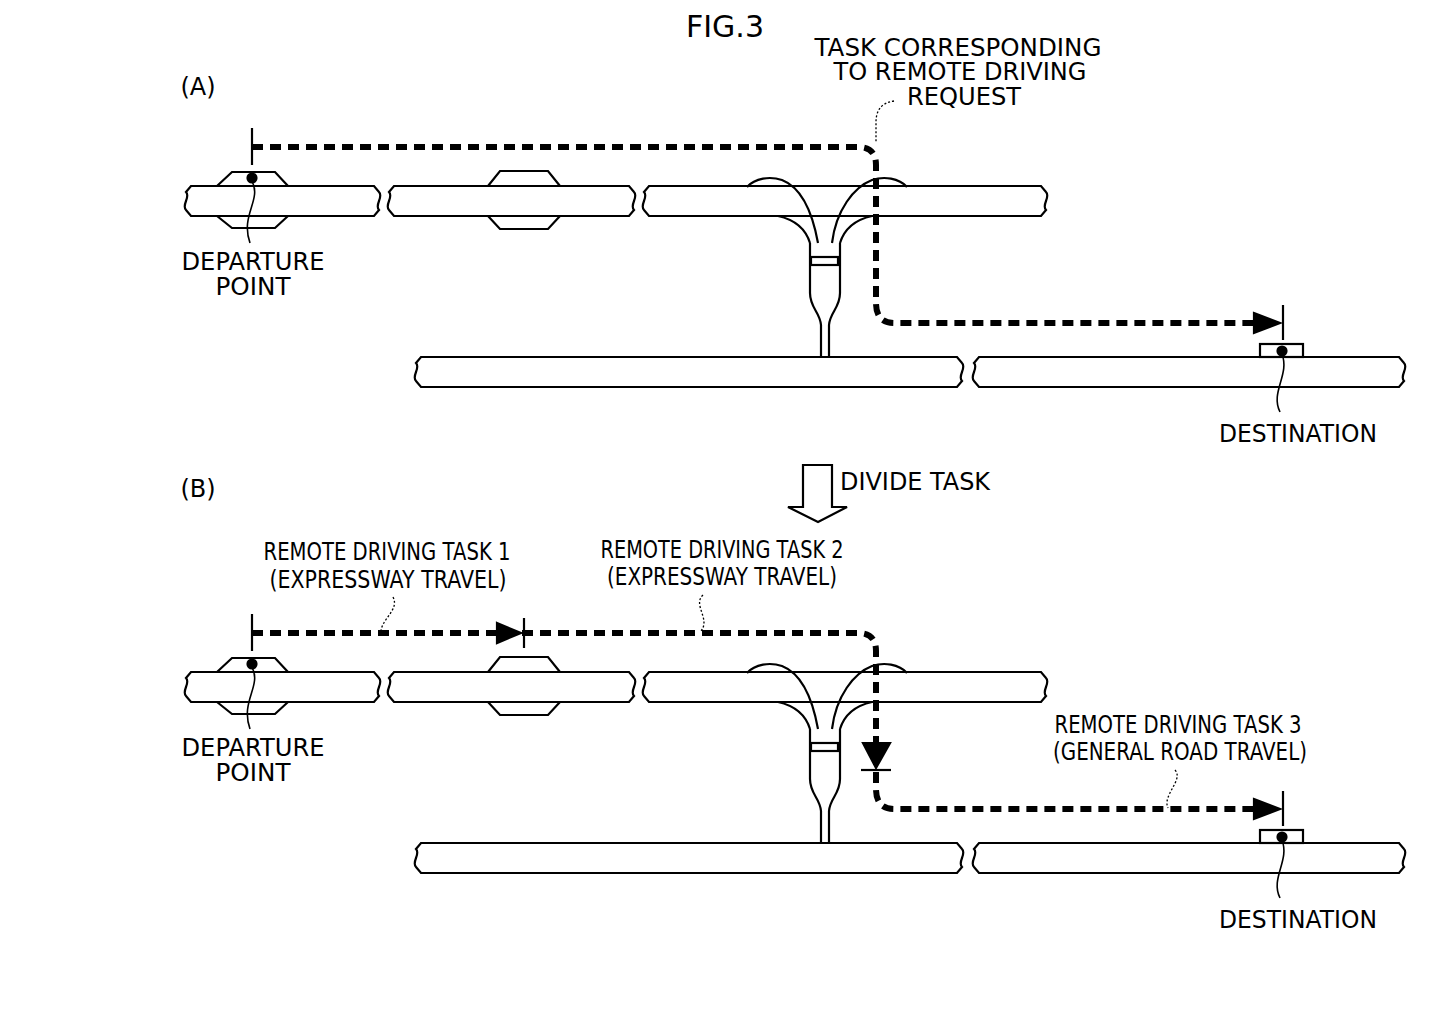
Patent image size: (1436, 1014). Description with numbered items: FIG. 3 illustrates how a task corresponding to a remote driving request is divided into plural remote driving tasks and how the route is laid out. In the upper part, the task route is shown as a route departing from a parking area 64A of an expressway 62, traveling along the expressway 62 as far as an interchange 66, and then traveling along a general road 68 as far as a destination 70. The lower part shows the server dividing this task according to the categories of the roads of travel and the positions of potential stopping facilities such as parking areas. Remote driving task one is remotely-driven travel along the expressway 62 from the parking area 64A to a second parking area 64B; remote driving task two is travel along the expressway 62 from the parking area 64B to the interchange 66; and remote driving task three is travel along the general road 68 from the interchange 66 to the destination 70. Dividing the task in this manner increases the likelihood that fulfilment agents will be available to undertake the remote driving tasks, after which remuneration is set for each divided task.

The expressway 62 is at (1010, 198).
The parking area 64A is at (233, 180).
The parking area 64B is at (527, 183).
The interchange 66 is at (775, 276).
The general road 68 is at (1385, 367).
The destination 70 is at (1290, 348).